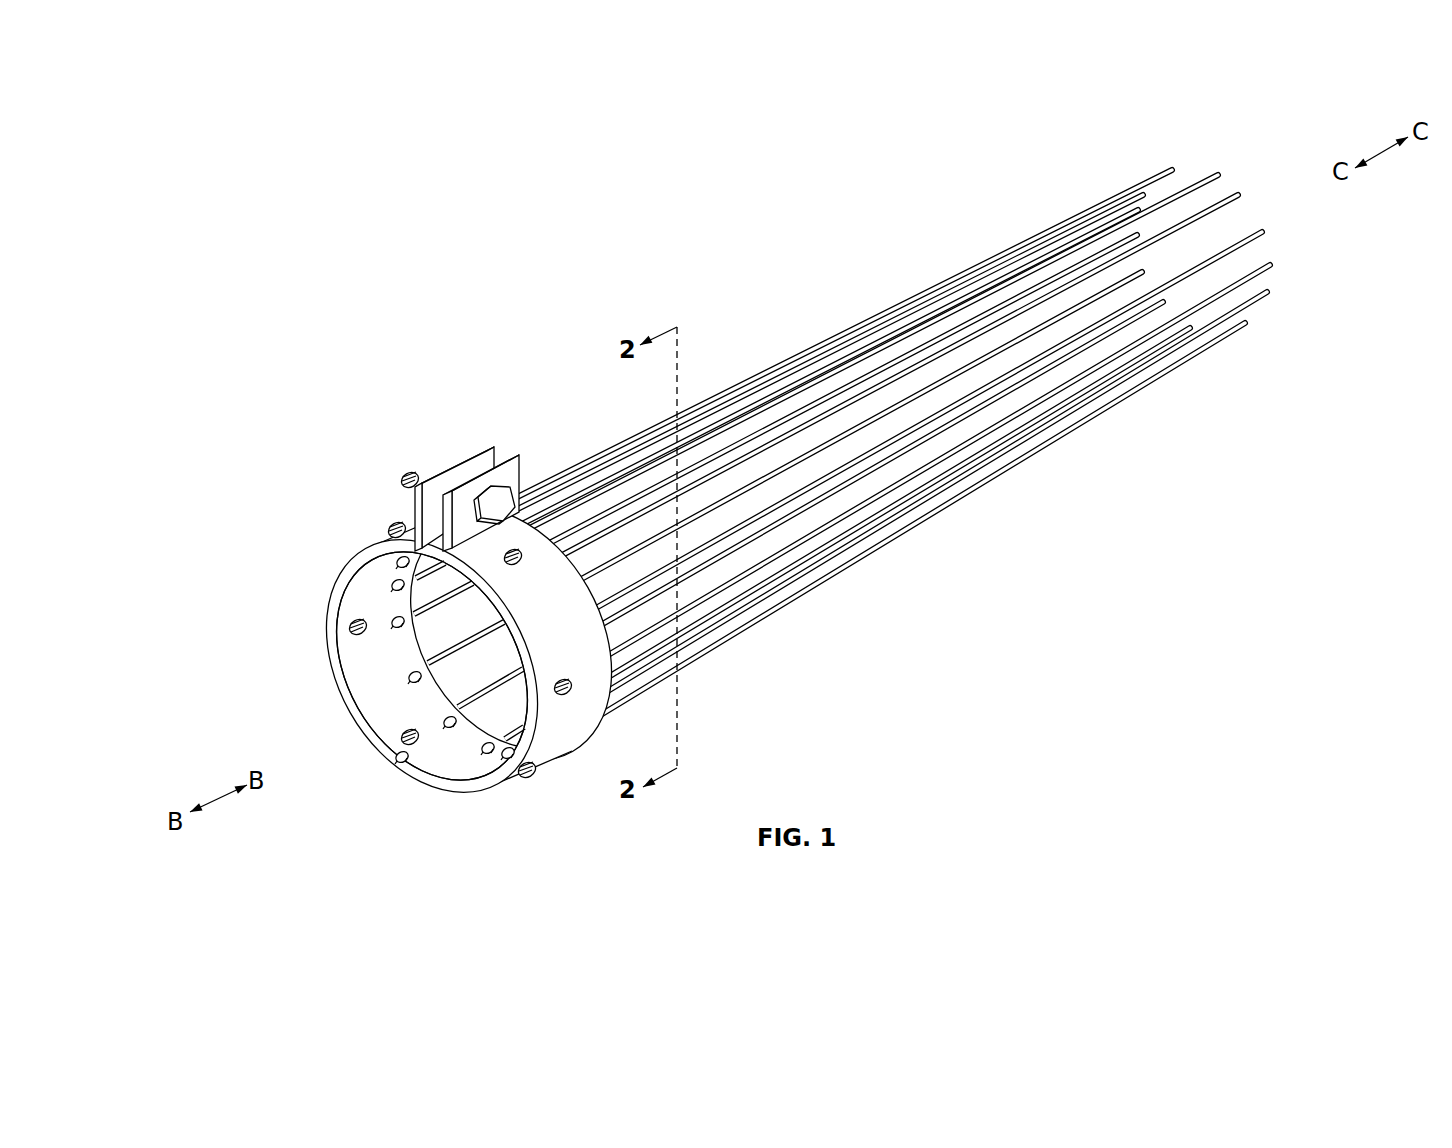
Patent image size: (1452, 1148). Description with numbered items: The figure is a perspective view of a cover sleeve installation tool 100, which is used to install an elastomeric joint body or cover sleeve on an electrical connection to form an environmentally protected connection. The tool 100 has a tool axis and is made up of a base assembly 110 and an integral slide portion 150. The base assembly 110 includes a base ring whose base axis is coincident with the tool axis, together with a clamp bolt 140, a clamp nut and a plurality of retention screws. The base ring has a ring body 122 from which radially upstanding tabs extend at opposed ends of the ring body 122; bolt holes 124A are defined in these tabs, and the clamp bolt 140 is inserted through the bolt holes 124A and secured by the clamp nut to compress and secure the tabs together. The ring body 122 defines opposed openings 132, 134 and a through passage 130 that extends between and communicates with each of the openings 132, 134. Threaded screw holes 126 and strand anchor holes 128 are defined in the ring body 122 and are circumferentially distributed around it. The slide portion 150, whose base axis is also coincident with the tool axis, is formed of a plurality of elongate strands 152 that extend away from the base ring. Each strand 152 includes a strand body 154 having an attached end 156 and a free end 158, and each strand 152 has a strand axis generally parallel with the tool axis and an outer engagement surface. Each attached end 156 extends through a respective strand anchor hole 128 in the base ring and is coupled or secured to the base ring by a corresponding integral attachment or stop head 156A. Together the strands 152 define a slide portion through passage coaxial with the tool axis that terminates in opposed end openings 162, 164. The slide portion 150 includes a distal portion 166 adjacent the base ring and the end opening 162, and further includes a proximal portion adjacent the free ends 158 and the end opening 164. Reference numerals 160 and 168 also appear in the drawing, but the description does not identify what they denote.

The cover sleeve installation tool 100 is at (799, 500).
The base assembly 110 is at (456, 640).
The ring body 122 is at (456, 658).
The bolt holes 124A is at (398, 459).
The threaded screw holes 126 is at (356, 642).
The strand anchor holes 128 is at (563, 752).
The through passage 130 is at (457, 760).
The opening 132 is at (397, 757).
The opening 134 is at (400, 733).
The clamp bolt 140 is at (431, 474).
The slide portion 150 is at (879, 428).
The strands 152 is at (782, 352).
The strand body 154 is at (811, 324).
The attached end 156 is at (583, 738).
The stop head 156A is at (400, 578).
The free end 158 is at (1246, 330).
The distal end 160 is at (1243, 210).
The end opening 162 is at (492, 678).
The end opening 164 is at (1293, 203).
The distal portion 166 is at (573, 437).
The distal portion 168 is at (1080, 190).